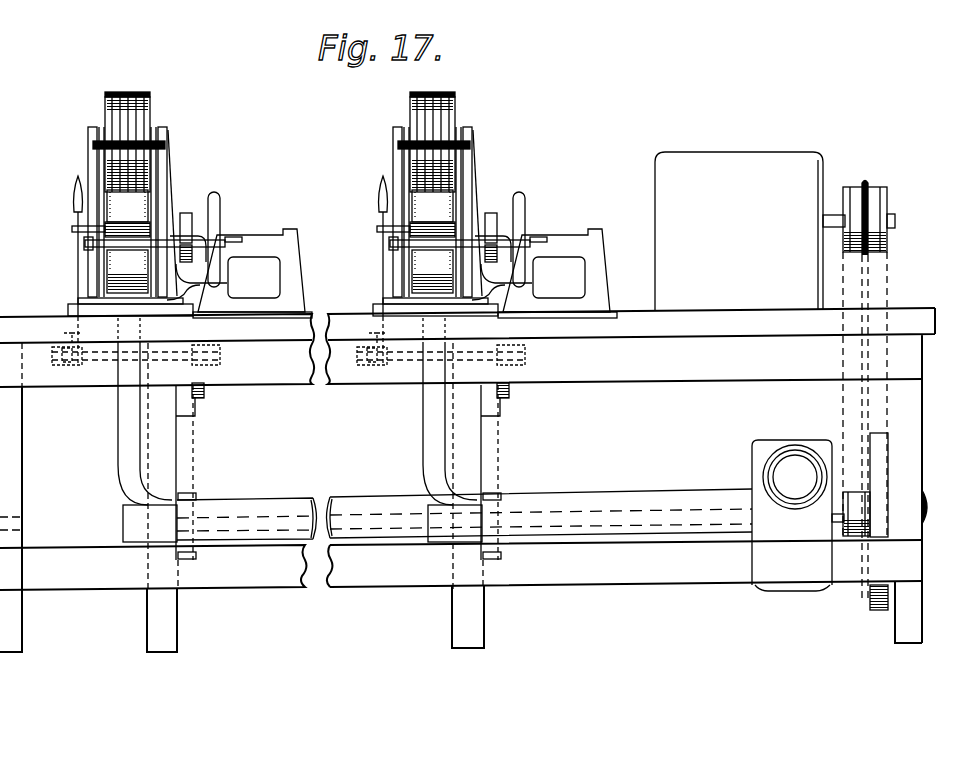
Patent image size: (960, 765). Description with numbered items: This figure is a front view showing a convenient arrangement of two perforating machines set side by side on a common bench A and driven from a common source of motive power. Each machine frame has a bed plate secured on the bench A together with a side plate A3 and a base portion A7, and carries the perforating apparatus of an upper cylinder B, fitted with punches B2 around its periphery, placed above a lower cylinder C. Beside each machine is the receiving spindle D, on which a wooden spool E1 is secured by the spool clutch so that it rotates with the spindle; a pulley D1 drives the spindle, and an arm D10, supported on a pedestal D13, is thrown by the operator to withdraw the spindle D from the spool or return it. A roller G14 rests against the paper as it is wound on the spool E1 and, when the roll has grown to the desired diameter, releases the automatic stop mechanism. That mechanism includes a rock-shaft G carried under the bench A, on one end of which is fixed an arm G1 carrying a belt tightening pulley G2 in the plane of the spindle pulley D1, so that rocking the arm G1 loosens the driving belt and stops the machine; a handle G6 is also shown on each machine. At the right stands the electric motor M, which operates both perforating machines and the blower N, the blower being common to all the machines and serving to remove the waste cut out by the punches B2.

The bench A is at (627, 312).
The side plate A3 is at (93, 270).
The base plate A7 is at (72, 311).
The upper cylinder B is at (147, 101).
The punches B2 is at (139, 93).
The lower cylinder C is at (142, 198).
The spindle D is at (495, 217).
The pulley D1 is at (189, 214).
The arm D10 is at (240, 238).
The pedestal D13 is at (292, 250).
The spool E1 is at (110, 241).
The rock-shaft G is at (104, 356).
The arm G1 is at (205, 393).
The belt tightening pulley G2 is at (186, 404).
The lever handle G6 is at (78, 180).
The roller G14 is at (115, 224).
The electric motor M is at (717, 156).
The blower N is at (770, 462).